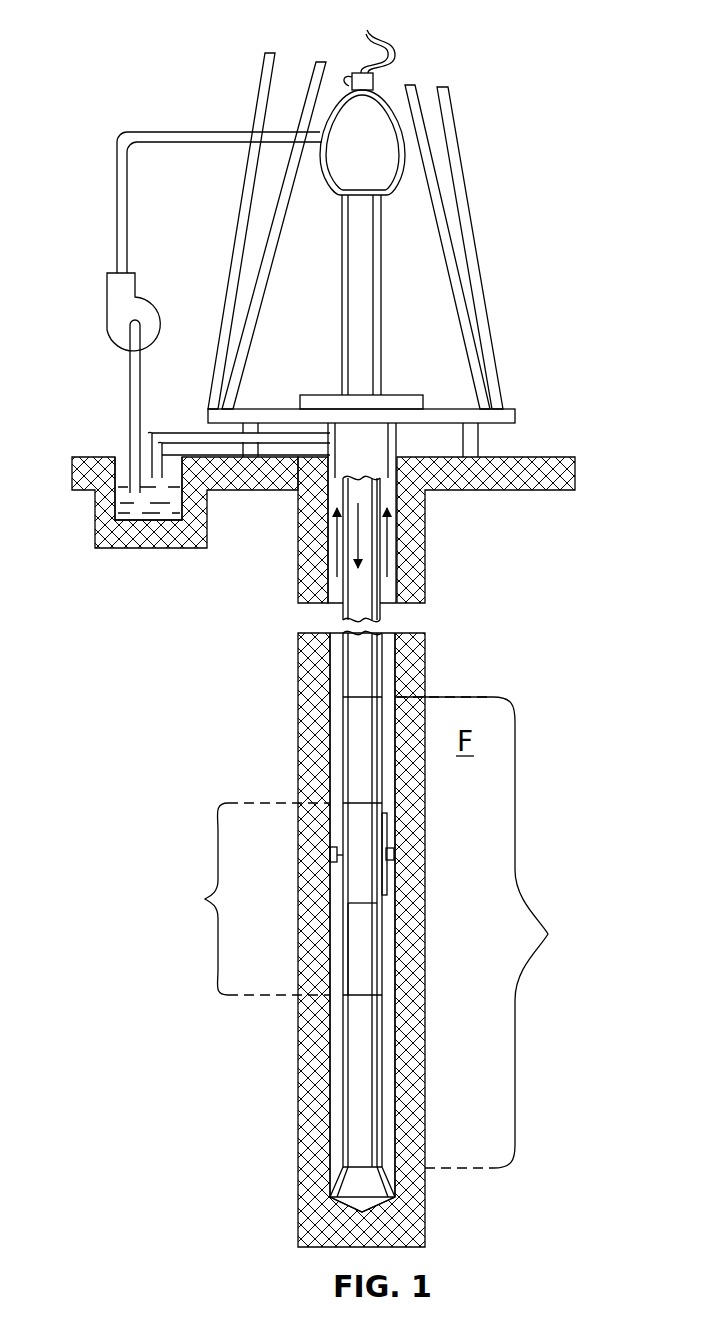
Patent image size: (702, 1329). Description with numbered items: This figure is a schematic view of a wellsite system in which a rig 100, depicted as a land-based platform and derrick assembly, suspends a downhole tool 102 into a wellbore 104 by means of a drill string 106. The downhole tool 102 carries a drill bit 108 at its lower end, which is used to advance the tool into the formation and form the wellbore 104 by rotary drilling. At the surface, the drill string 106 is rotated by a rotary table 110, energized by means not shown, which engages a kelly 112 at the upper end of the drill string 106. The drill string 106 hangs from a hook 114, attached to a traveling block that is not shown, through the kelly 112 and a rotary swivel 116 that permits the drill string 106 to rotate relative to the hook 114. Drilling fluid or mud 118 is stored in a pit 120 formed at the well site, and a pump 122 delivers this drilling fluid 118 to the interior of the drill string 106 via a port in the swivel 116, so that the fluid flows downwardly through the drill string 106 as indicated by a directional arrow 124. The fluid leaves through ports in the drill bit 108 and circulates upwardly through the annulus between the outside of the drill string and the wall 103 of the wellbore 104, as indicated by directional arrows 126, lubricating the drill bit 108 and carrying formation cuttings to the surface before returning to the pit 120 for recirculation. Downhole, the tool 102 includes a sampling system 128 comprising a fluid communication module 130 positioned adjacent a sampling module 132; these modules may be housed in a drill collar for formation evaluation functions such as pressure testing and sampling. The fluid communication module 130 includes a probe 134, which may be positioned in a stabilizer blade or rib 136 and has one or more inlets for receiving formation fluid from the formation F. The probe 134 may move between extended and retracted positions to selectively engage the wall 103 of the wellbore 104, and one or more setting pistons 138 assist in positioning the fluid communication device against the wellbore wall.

The rig 100 is at (146, 40).
The downhole tool 102 is at (332, 852).
The wall 103 is at (390, 600).
The wellbore 104 is at (388, 674).
The drill string 106 is at (360, 653).
The drill bit 108 is at (347, 1182).
The rotary table 110 is at (388, 395).
The kelly 112 is at (383, 270).
The hook 114 is at (368, 37).
The rotary swivel 116 is at (340, 190).
The drilling fluid 118 is at (155, 522).
The pit 120 is at (113, 503).
The pump 122 is at (120, 342).
The directional arrow 124 is at (358, 540).
The directional arrows 126 is at (390, 525).
The sampling system 128 is at (271, 899).
The fluid communication module 130 is at (348, 903).
The sampling module 132 is at (353, 935).
The probe 134 is at (392, 858).
The stabilizer blade 136 is at (387, 830).
The setting piston 138 is at (330, 855).